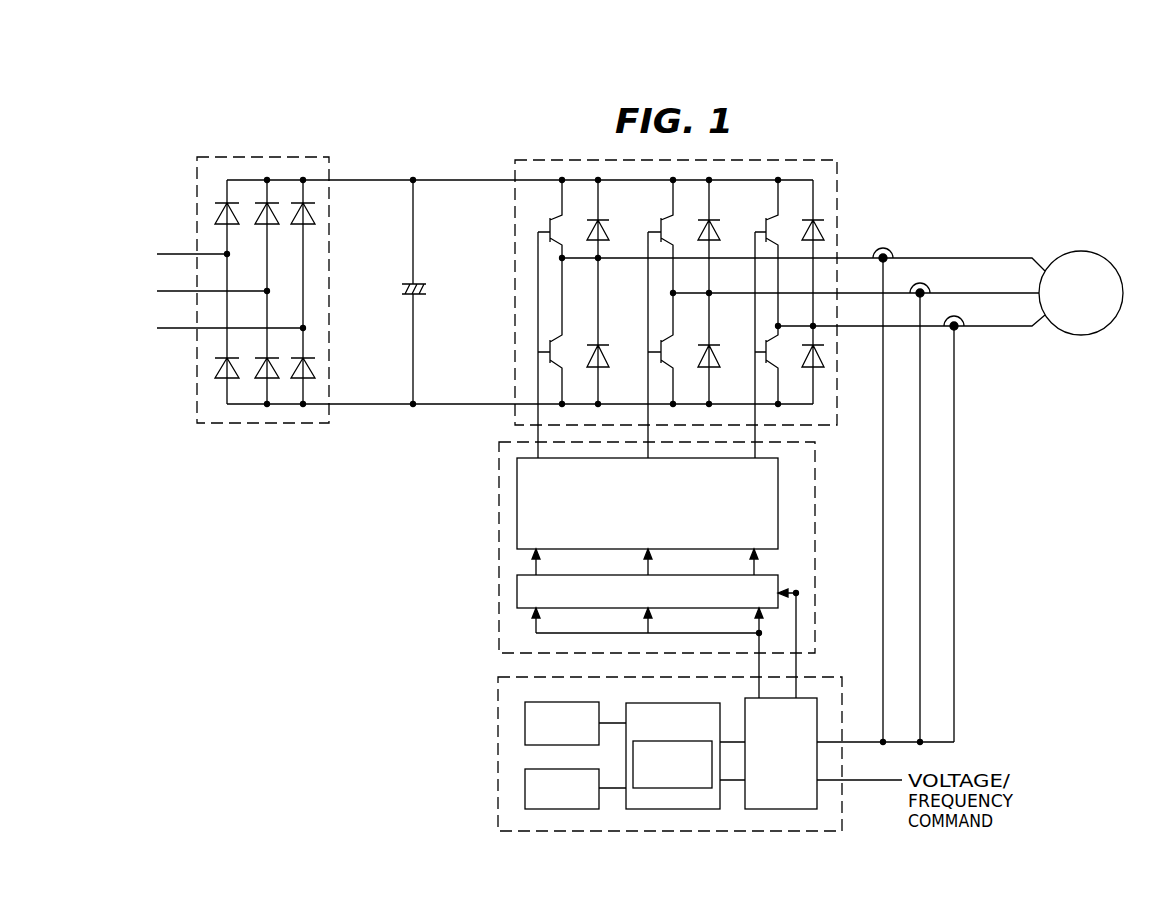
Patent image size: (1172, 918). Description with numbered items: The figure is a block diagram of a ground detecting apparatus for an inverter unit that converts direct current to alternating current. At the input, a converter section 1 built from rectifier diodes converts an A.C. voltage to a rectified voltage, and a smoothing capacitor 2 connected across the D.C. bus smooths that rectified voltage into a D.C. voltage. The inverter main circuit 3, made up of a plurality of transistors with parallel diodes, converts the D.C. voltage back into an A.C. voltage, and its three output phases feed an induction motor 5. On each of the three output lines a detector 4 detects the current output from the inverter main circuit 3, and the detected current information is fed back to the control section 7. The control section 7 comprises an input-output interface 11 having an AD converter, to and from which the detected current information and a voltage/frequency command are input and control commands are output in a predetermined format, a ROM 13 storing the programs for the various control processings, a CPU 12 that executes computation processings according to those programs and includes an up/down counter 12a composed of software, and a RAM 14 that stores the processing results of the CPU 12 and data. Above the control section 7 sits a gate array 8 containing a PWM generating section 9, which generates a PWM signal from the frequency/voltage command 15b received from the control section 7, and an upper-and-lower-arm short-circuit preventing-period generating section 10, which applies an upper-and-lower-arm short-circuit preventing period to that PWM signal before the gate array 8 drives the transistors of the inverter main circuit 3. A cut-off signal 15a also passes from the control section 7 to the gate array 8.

The converter section 1 is at (313, 157).
The smoothing capacitor 2 is at (403, 300).
The inverter main circuit 3 is at (840, 160).
The detector 4 is at (886, 249).
The induction motor 5 is at (1080, 251).
The control section 7 is at (748, 831).
The gate array 8 is at (499, 630).
The PWM generating section 9 is at (517, 593).
The upper-and-lower-arm short-circuit preventing-period generating section 10 is at (517, 509).
The input-output interface 11 is at (797, 809).
The CPU 12 is at (662, 786).
The up/down counter 12a is at (688, 809).
The ROM 13 is at (525, 788).
The RAM 14 is at (525, 716).
The cut-off signal 15a is at (759, 668).
The frequency/voltage command 15b is at (797, 632).